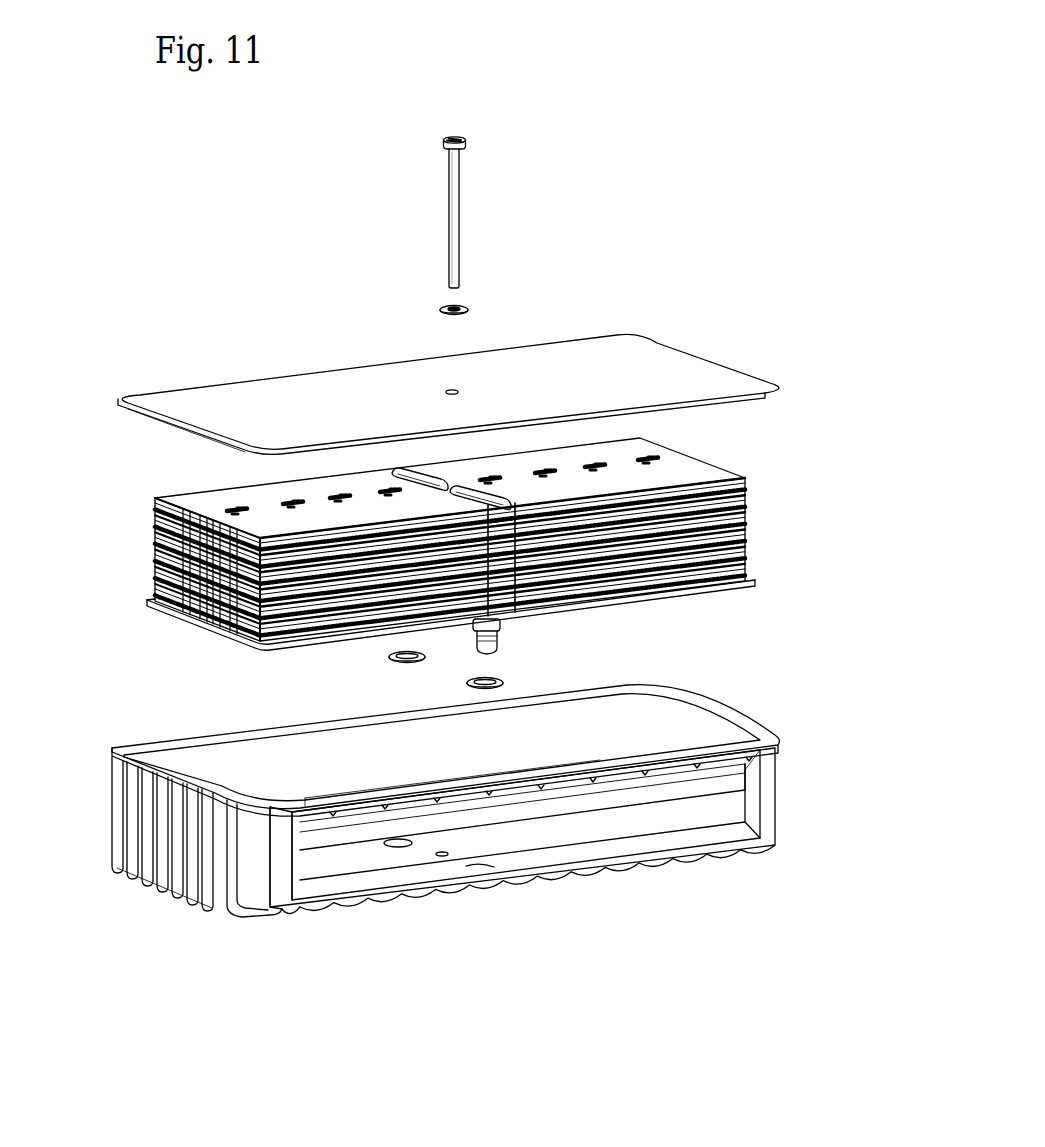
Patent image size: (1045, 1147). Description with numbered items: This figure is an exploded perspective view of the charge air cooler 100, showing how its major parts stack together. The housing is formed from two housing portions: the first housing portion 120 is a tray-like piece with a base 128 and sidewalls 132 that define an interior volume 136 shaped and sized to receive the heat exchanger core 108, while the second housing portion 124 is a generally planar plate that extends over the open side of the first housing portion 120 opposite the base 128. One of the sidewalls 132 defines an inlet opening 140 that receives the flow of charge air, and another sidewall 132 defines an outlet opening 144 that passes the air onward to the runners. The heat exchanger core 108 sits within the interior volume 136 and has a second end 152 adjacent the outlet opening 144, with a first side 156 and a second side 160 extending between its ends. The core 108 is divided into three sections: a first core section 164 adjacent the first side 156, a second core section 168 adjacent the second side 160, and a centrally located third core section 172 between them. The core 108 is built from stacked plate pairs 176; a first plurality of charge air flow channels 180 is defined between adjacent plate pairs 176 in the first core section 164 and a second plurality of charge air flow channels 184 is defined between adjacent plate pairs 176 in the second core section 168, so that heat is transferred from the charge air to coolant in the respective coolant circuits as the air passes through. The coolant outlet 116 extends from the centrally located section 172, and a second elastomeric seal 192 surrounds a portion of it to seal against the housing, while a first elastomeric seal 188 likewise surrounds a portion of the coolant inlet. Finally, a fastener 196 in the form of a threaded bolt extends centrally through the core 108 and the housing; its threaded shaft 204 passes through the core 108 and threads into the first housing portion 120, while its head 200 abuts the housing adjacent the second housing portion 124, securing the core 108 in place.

The charge air cooler 100 is at (625, 82).
The heat exchanger core 108 is at (435, 556).
The coolant outlet 116 is at (491, 641).
The first housing portion 120 is at (410, 816).
The second housing portion 124 is at (655, 349).
The base 128 is at (364, 876).
The sidewalls 132 is at (178, 752).
The interior volume 136 is at (680, 702).
The inlet opening 140 is at (681, 862).
The outlet opening 144 is at (220, 760).
The second end 152 is at (475, 638).
The first side 156 is at (746, 503).
The second side 160 is at (166, 568).
The first core section 164 is at (681, 586).
The second core section 168 is at (304, 630).
The third core section 172 is at (516, 606).
The plate pairs 176 is at (156, 536).
The first plurality of charge air flow channels 180 is at (621, 578).
The second plurality of charge air flow channels 184 is at (336, 611).
The first elastomeric seal 188 is at (399, 664).
The second elastomeric seal 192 is at (504, 682).
The fastener 196 is at (493, 211).
The head 200 is at (463, 138).
The threaded shaft 204 is at (457, 251).